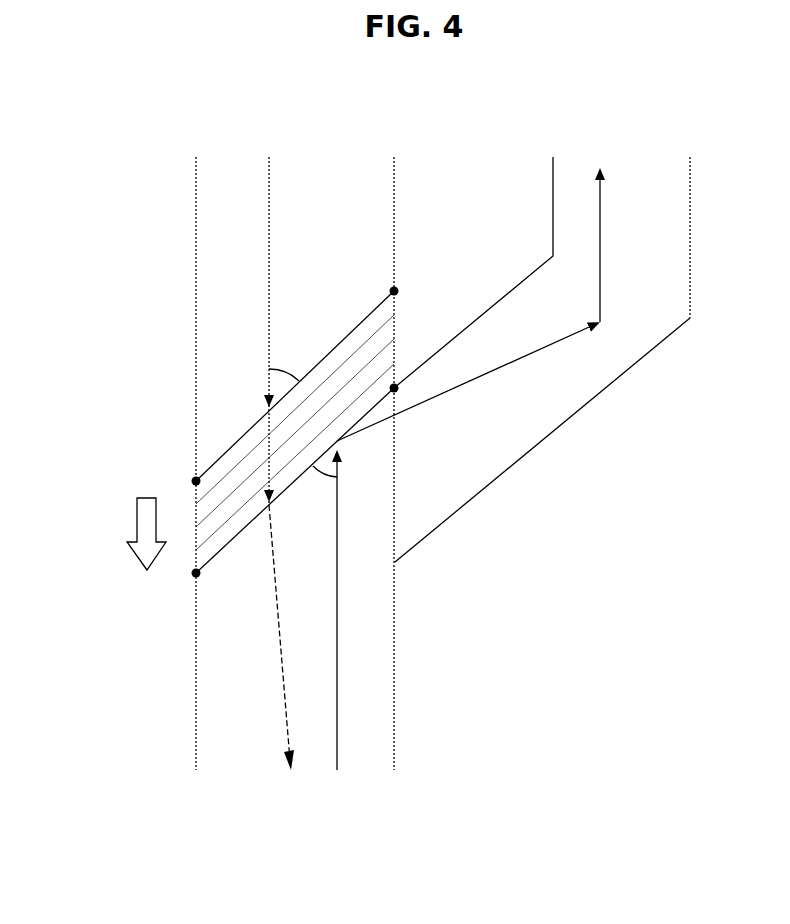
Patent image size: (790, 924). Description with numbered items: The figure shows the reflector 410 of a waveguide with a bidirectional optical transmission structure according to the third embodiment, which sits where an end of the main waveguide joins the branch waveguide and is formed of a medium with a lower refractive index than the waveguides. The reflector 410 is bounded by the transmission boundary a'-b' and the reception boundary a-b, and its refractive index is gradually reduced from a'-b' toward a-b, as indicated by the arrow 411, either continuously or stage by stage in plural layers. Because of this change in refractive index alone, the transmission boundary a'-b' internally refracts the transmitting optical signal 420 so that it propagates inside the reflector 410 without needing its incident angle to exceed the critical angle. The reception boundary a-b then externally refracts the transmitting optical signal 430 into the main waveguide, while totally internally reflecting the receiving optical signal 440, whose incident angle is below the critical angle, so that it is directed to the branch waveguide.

The reflector 410 is at (237, 465).
The gradual reduction of refractive index 411 is at (145, 515).
The transmitting optical signal 420 is at (269, 246).
The transmitting optical signal 430 is at (268, 430).
The receiving optical signal 440 is at (338, 656).